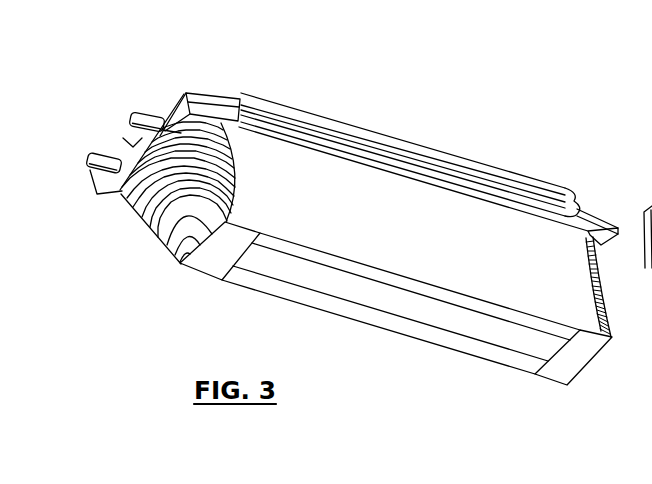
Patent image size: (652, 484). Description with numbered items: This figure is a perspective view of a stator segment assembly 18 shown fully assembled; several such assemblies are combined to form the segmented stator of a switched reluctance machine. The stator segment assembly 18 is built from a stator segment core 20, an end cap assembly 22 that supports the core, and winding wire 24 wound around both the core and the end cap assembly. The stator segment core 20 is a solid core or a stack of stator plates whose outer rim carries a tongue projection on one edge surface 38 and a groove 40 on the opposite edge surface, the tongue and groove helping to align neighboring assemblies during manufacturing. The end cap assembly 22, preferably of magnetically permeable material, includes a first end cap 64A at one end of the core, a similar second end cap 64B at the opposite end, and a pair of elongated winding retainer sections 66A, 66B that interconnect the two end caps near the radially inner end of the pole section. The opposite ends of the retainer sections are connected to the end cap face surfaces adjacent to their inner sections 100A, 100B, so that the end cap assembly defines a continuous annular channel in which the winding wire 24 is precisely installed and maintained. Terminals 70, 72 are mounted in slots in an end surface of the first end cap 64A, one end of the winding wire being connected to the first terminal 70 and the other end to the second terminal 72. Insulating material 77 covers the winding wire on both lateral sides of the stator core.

The stator segment assembly 18 is at (452, 113).
The stator segment core 20 is at (352, 114).
The end cap assembly 22 is at (169, 84).
The winding wire 24 is at (137, 220).
The edge surface 38 is at (287, 114).
The groove 40 is at (527, 180).
The first end cap 64A is at (202, 102).
The second end cap 64B is at (597, 231).
The winding retainer section 66A is at (423, 337).
The winding retainer section 66B is at (349, 265).
The first terminal 70 is at (91, 157).
The second terminal 72 is at (132, 112).
The insulating material 77 is at (339, 196).
The inner section 100A is at (220, 262).
The inner section 100B is at (560, 376).